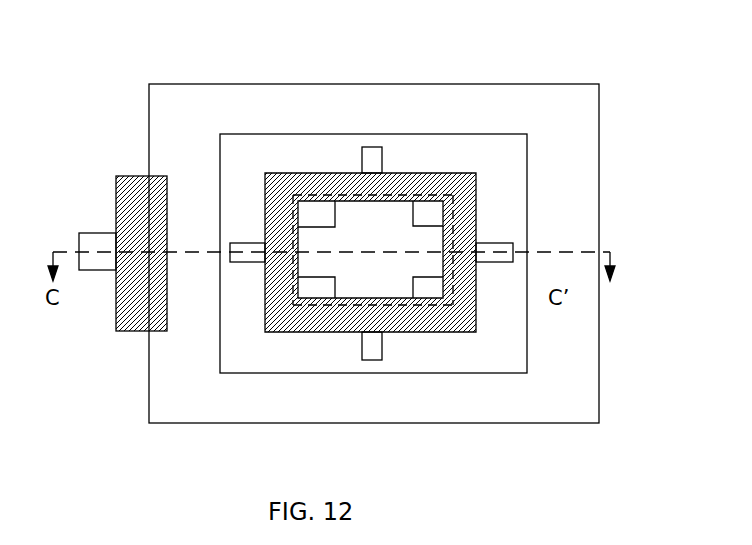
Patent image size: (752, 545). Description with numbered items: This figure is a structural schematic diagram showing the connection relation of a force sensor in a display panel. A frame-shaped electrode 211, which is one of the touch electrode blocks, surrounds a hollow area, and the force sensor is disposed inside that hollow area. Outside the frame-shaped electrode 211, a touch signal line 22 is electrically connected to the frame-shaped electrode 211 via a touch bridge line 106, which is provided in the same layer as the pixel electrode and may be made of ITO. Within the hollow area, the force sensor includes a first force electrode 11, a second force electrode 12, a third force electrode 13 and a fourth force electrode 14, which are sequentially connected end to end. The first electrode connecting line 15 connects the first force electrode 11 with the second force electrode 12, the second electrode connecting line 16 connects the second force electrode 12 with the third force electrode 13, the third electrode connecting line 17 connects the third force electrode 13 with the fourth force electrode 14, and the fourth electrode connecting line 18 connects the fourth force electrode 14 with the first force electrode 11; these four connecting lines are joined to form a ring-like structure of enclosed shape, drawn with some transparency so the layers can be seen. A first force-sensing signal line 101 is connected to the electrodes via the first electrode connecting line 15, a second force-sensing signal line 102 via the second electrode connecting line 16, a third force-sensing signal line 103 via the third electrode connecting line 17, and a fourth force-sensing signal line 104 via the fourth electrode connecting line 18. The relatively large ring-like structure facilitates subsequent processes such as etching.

The frame-shaped electrode 211 is at (556, 104).
The touch bridge line 106 is at (139, 207).
The touch signal line 22 is at (92, 238).
The fourth electrode connecting line 18 is at (410, 185).
The first electrode connecting line 15 is at (272, 270).
The third electrode connecting line 17 is at (458, 263).
The second electrode connecting line 16 is at (316, 322).
The first force electrode 11 is at (307, 200).
The fourth force electrode 14 is at (438, 206).
The second force electrode 12 is at (318, 293).
The third force electrode 13 is at (428, 288).
The fourth force-sensing signal line 104 is at (372, 162).
The second force-sensing signal line 102 is at (383, 350).
The first force-sensing signal line 101 is at (255, 247).
The third force-sensing signal line 103 is at (483, 248).